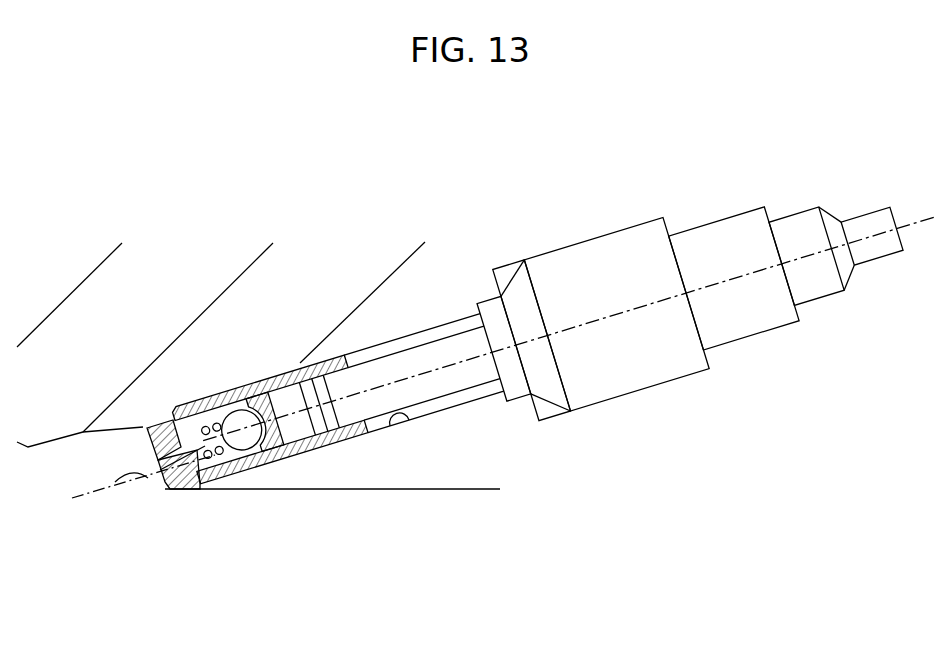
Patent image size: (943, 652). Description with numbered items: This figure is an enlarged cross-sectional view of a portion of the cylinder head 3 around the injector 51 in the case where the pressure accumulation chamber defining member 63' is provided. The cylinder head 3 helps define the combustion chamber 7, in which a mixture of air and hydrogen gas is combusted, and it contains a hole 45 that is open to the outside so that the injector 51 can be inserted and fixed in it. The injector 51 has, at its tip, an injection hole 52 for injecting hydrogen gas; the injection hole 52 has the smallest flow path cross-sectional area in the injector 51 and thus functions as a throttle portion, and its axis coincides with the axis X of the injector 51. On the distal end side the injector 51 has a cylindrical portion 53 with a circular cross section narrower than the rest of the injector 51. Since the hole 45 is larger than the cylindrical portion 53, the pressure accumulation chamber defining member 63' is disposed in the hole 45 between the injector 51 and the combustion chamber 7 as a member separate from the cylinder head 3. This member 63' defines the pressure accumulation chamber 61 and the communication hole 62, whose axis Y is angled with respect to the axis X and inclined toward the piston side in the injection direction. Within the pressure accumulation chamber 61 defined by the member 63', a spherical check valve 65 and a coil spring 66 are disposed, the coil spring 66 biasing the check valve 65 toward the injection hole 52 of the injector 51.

The cylinder head 3 is at (163, 260).
The combustion chamber 7 is at (58, 453).
The hole 45 is at (395, 430).
The injector 51 is at (663, 345).
The injection hole 52 is at (250, 387).
The cylindrical portion 53 is at (460, 387).
The pressure accumulation chamber 61 is at (223, 493).
The communication hole 62 is at (155, 497).
The pressure accumulation chamber defining member 63' is at (400, 449).
The spherical check valve 65 is at (252, 450).
The coil spring 66 is at (195, 492).
The axis of the injector X is at (733, 280).
The axis of the communication hole Y is at (134, 478).